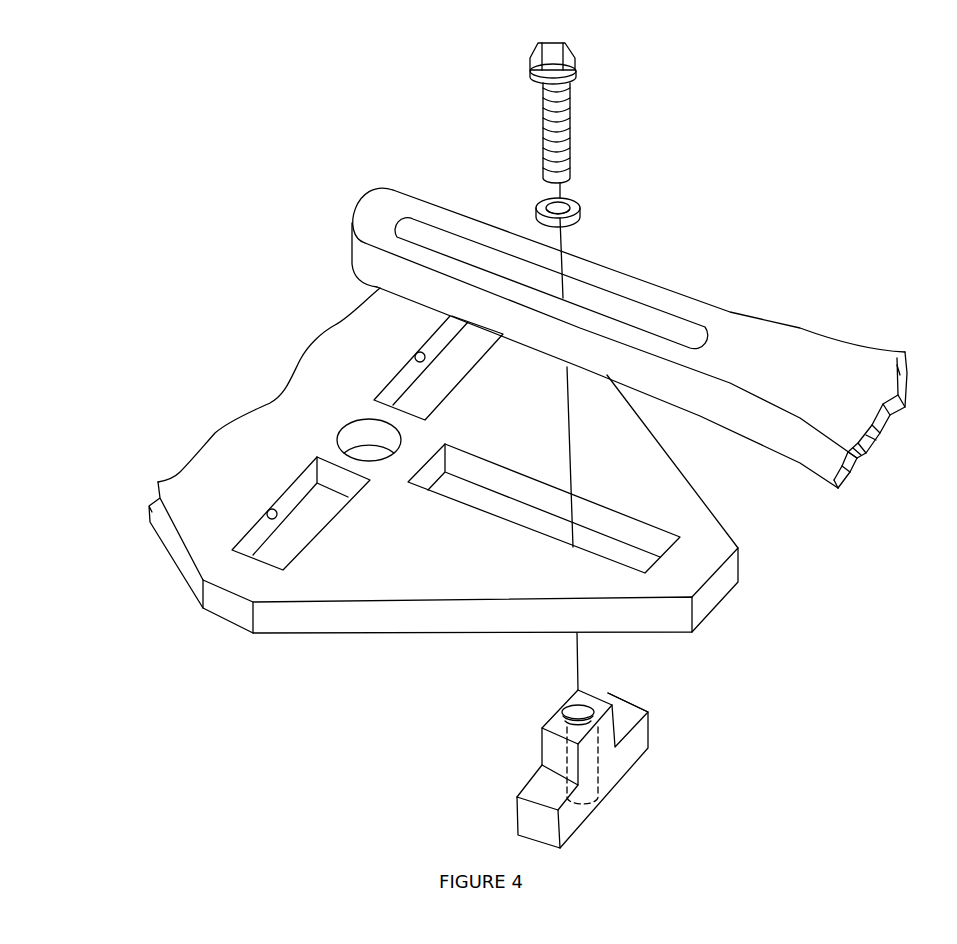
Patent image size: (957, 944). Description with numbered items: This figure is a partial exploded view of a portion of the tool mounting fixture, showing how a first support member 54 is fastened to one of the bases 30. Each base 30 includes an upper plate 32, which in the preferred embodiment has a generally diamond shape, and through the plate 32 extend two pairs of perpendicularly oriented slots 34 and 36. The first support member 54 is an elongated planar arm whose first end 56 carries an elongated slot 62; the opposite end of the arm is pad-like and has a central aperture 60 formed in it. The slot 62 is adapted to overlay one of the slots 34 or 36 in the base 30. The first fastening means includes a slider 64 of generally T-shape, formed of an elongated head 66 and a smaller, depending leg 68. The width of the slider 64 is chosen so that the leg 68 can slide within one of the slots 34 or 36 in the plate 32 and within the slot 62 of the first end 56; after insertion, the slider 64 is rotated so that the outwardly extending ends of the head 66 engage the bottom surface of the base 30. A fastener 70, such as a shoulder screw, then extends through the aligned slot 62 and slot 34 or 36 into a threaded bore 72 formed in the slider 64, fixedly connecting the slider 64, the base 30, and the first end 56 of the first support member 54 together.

The base 30 is at (357, 654).
The upper plate 32 is at (220, 622).
The slot 34 is at (692, 495).
The slot 36 is at (413, 358).
The first support member 54 is at (800, 322).
The first end 56 is at (378, 190).
The central aperture 60 is at (343, 427).
The elongated slot 62 is at (618, 312).
The slider 64 is at (660, 717).
The head 66 is at (637, 750).
The leg 68 is at (555, 750).
The fastener 70 is at (569, 130).
The threaded bore 72 is at (600, 768).